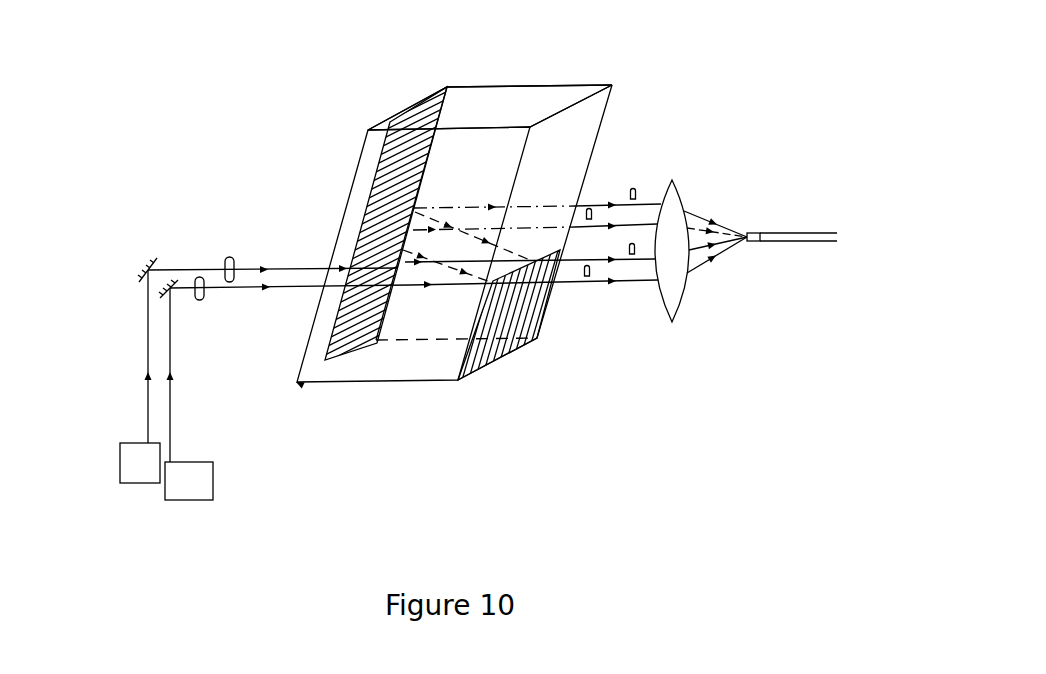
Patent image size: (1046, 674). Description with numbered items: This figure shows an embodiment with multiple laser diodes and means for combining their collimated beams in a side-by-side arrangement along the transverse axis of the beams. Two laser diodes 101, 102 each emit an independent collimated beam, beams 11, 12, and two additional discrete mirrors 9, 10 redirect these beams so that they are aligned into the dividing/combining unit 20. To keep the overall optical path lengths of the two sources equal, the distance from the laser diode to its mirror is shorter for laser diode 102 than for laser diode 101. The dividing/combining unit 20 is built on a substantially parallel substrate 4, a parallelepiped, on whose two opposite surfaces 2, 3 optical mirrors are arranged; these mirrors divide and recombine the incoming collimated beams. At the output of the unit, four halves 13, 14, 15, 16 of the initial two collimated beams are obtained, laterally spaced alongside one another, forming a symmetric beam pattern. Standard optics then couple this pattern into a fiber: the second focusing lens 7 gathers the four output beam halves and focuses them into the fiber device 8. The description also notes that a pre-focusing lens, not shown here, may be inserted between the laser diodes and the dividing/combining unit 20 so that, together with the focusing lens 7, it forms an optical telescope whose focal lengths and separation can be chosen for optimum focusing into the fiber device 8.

The surface 2 is at (519, 312).
The surface 3 is at (385, 224).
The substrate 4 is at (453, 222).
The second focusing lens 7 is at (672, 264).
The fiber device 8 is at (760, 238).
The discrete mirror 9 is at (284, 271).
The discrete mirror 10 is at (259, 258).
The collimated beam 11 is at (205, 301).
The collimated beam 12 is at (235, 256).
The beam half 13 is at (534, 286).
The beam half 14 is at (530, 252).
The beam half 15 is at (537, 199).
The beam half 16 is at (535, 197).
The dividing/combining unit 20 is at (523, 63).
The laser diode 101 is at (214, 394).
The laser diode 102 is at (116, 376).